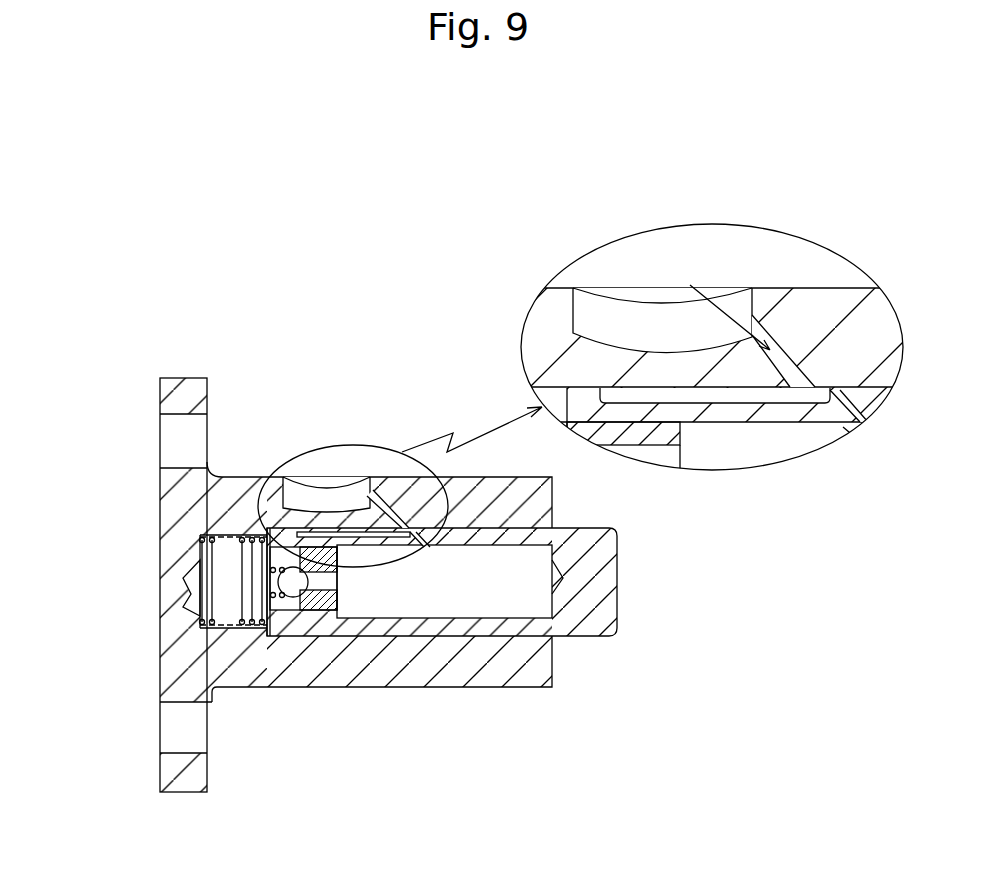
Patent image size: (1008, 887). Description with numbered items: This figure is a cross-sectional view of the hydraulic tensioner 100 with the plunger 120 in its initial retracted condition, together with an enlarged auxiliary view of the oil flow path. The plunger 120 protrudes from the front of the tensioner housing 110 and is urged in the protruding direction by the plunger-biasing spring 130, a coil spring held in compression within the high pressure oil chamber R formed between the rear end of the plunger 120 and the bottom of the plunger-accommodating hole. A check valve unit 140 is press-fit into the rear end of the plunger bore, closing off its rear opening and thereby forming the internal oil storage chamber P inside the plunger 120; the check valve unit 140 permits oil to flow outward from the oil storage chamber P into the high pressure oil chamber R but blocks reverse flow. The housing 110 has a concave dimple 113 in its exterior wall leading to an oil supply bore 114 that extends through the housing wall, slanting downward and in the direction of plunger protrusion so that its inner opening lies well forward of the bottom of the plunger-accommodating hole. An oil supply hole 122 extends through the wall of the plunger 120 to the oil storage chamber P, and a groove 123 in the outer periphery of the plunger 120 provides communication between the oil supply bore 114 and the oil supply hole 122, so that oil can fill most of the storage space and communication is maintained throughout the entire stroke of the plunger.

The hydraulic tensioner 100 is at (108, 384).
The tensioner housing 110 is at (490, 670).
The concave dimple 113 is at (658, 323).
The oil supply bore 114 is at (790, 353).
The plunger 120 is at (597, 583).
The oil supply hole 122 is at (826, 416).
The groove 123 is at (764, 401).
The plunger-biasing spring 130 is at (228, 625).
The check valve unit 140 is at (293, 615).
The high pressure oil chamber R is at (228, 573).
The oil storage chamber P is at (458, 592).